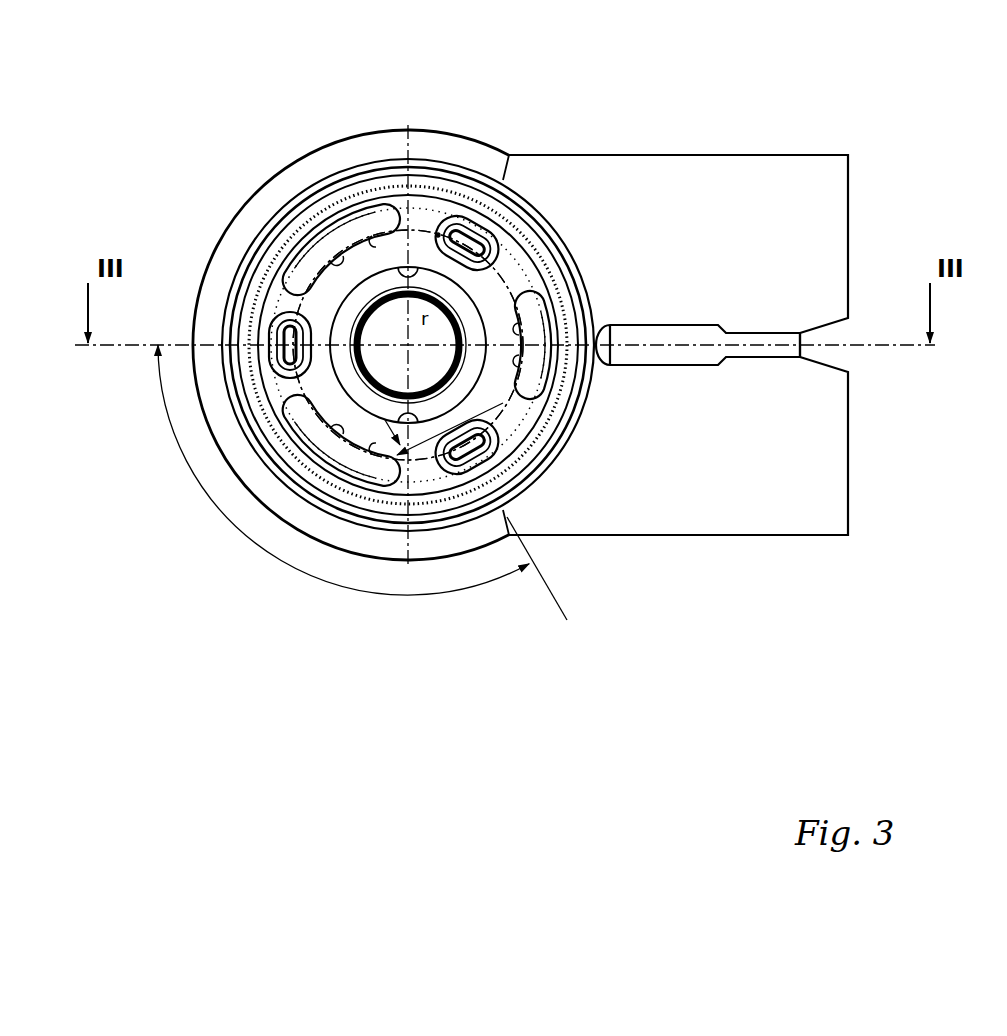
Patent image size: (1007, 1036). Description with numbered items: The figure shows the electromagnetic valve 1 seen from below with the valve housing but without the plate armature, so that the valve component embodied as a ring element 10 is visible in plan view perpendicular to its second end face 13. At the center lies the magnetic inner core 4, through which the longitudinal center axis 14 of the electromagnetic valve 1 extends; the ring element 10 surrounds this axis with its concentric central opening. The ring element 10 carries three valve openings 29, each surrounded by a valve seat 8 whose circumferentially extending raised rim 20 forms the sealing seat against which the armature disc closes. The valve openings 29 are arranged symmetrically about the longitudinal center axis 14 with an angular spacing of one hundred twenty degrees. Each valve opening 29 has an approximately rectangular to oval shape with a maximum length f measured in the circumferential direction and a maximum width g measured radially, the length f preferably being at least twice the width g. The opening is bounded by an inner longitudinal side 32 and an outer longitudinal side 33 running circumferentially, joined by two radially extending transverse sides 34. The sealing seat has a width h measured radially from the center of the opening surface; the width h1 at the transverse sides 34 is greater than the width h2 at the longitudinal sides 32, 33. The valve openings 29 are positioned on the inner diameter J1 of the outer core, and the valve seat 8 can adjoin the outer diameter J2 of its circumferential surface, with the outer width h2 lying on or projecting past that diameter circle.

The electromagnetic valve 1 is at (170, 148).
The magnetic inner core 4 is at (390, 317).
The valve seat 8 is at (430, 303).
The ring element 10 is at (505, 283).
The second end face 13 is at (302, 270).
The longitudinal center axis 14 is at (408, 345).
The raised rim 20 is at (440, 298).
The valve opening 29 is at (293, 317).
The inner longitudinal side 32 is at (493, 232).
The outer longitudinal side 33 is at (458, 263).
The transverse side 34 is at (438, 235).
The inner diameter of the outer core J1 is at (513, 297).
The outer diameter of the outer core J2 is at (528, 410).
The length of the valve opening f is at (277, 323).
The width of the valve opening g is at (505, 433).
The width of the sealing seat h is at (428, 447).
The width of the valve seat at the transverse sides h1 is at (408, 460).
The width of the valve seat at the longitudinal sides h2 is at (467, 440).